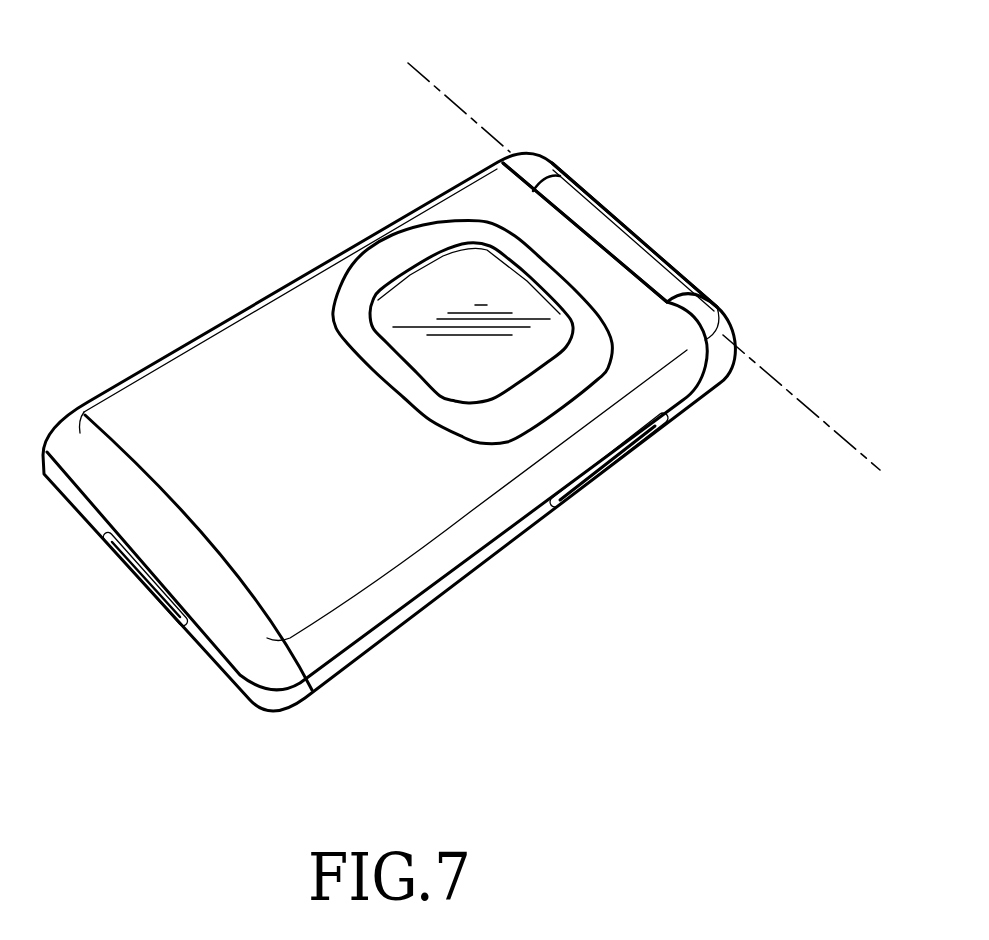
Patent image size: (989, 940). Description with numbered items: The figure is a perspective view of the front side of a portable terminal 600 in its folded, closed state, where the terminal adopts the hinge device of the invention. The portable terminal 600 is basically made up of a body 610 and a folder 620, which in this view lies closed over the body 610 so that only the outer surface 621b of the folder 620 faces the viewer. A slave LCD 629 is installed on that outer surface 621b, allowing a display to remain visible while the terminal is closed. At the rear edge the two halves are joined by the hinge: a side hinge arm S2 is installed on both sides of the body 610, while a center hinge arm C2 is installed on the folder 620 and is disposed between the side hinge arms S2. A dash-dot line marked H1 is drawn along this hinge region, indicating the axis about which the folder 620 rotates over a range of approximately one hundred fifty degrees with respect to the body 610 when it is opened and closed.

The portable terminal 600 is at (224, 102).
The body 610 is at (492, 632).
The folder 620 is at (215, 318).
The outer surface 621b is at (120, 402).
The slave LCD 629 is at (435, 297).
The center hinge arm C2 is at (637, 220).
The side hinge arm S2 is at (547, 160).
The hinge axis H1 is at (458, 108).